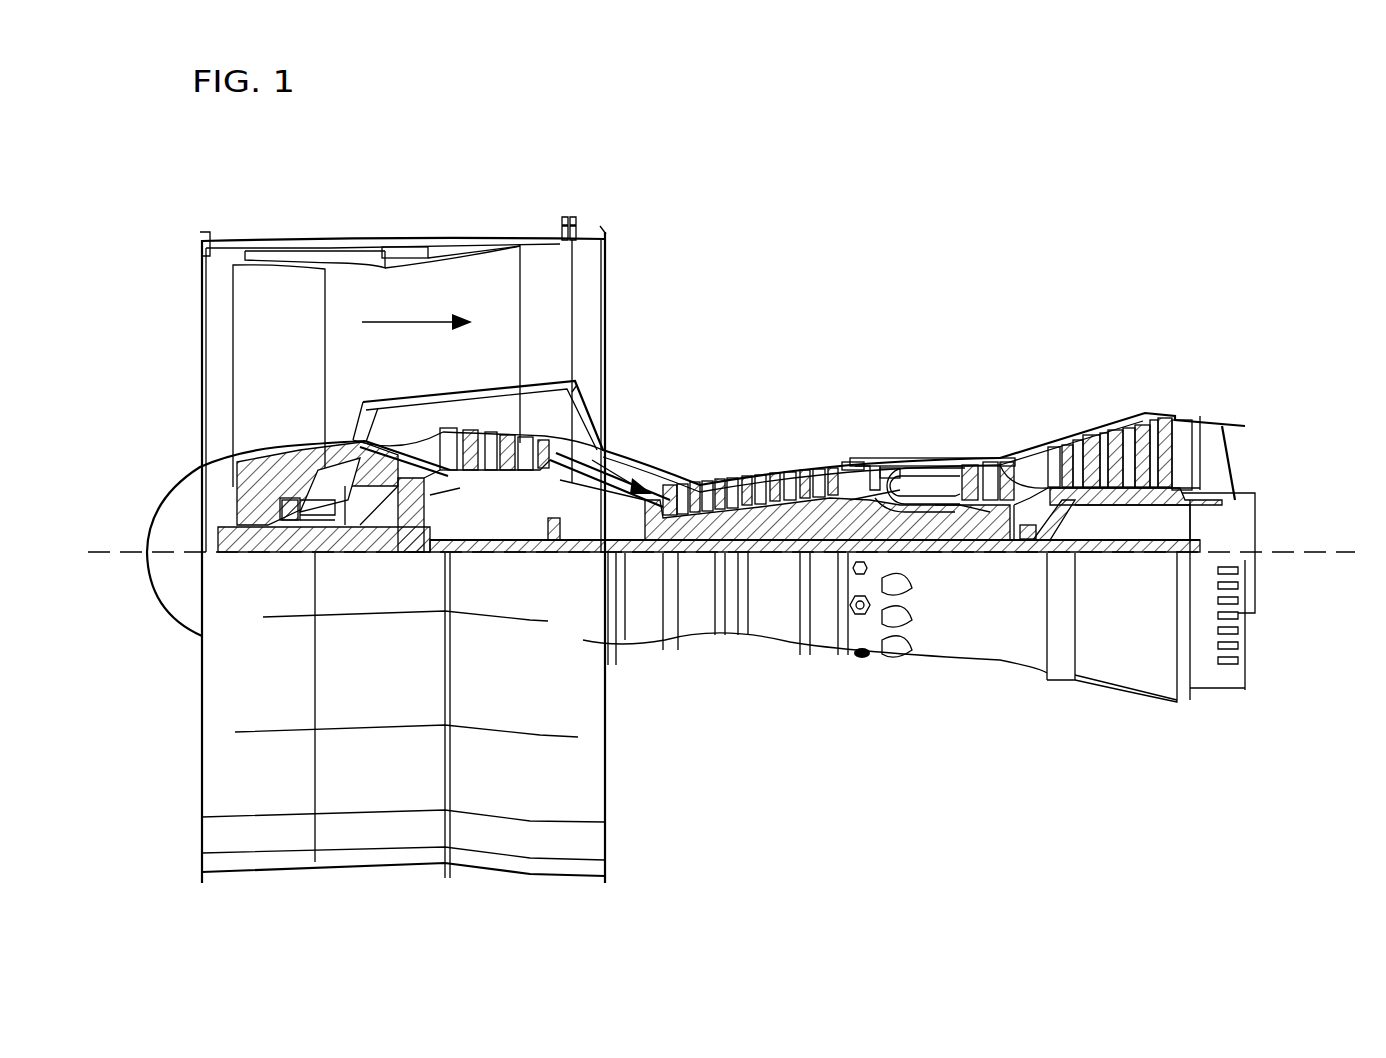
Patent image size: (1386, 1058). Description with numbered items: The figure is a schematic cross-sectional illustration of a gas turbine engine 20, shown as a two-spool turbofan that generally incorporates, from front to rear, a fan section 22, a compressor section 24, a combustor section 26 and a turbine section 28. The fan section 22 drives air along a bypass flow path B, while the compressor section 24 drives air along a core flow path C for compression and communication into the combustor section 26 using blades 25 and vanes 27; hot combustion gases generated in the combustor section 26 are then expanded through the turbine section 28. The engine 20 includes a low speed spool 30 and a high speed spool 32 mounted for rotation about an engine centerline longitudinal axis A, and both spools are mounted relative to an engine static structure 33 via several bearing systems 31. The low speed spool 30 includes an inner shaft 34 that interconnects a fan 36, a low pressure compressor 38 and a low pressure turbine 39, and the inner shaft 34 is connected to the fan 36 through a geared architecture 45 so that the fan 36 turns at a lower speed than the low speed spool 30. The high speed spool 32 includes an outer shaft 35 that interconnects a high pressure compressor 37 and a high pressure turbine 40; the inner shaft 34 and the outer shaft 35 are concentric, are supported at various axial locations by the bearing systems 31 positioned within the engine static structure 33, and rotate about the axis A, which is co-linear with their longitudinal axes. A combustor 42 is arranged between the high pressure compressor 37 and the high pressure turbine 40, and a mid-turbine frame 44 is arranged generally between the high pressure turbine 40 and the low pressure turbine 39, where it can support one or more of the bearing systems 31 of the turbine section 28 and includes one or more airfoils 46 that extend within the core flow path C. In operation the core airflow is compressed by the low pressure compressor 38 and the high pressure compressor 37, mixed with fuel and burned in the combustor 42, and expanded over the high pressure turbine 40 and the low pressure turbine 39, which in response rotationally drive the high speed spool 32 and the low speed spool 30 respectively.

The gas turbine engine 20 is at (910, 297).
The fan section 22 is at (322, 236).
The compressor section 24 is at (656, 452).
The blades 25 is at (485, 440).
The combustor section 26 is at (900, 450).
The vanes 27 is at (500, 440).
The turbine section 28 is at (1062, 408).
The low speed spool 30 is at (777, 557).
The bearing systems 31 is at (310, 527).
The high speed spool 32 is at (820, 490).
The engine static structure 33 is at (825, 642).
The inner shaft 34 is at (634, 565).
The outer shaft 35 is at (920, 525).
The fan 36 is at (298, 380).
The high pressure compressor 37 is at (740, 490).
The low pressure compressor 38 is at (555, 398).
The low pressure turbine 39 is at (1120, 425).
The high pressure turbine 40 is at (978, 465).
The combustor 42 is at (905, 485).
The mid-turbine frame 44 is at (1042, 456).
The geared architecture 45 is at (408, 505).
The airfoils 46 is at (1062, 515).
The engine centerline longitudinal axis A is at (1350, 552).
The bypass flow path B is at (402, 323).
The core flow path C is at (622, 470).